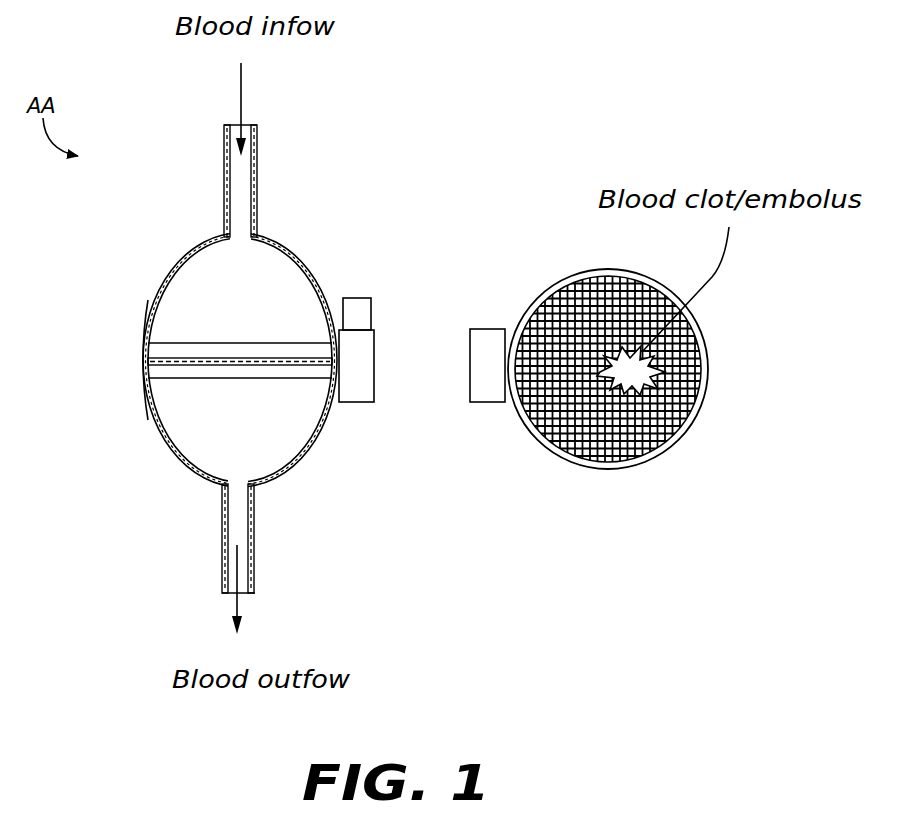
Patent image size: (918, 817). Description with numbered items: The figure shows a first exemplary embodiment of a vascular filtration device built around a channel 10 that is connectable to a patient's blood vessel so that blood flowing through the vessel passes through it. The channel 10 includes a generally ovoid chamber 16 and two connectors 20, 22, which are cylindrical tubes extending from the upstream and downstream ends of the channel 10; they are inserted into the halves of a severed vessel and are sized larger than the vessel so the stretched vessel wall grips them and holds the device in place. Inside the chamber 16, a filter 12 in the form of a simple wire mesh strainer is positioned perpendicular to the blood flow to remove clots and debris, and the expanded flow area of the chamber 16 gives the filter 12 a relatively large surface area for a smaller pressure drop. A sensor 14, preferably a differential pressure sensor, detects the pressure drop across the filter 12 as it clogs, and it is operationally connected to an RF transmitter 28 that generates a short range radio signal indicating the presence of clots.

The channel 10 is at (300, 253).
The filter 12 is at (265, 365).
The sensor 14 is at (468, 372).
The chamber 16 is at (141, 332).
The connector 20 is at (224, 187).
The connector 22 is at (222, 553).
The RF transmitter 28 is at (355, 298).